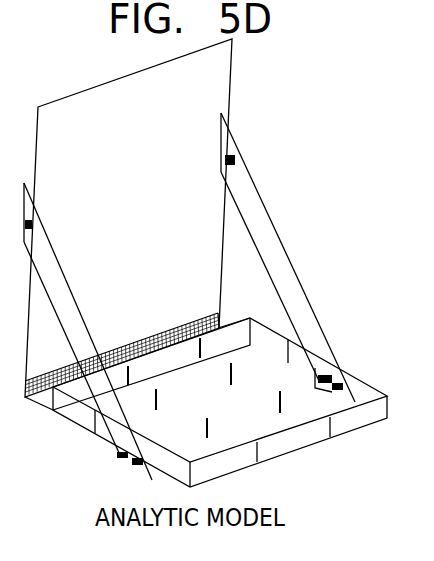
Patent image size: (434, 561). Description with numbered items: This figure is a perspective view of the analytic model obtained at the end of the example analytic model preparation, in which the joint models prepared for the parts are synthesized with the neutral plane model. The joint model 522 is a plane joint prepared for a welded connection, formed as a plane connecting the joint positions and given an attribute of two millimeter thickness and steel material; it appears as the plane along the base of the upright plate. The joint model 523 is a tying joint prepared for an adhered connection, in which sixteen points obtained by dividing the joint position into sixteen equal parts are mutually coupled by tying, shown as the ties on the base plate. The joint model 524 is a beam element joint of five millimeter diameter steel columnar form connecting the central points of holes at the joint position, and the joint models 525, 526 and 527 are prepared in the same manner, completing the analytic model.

The joint model 522 is at (198, 320).
The joint model 523 is at (237, 400).
The joint model 524 is at (30, 223).
The joint model 525 is at (140, 458).
The joint model 526 is at (233, 162).
The joint model 527 is at (324, 373).